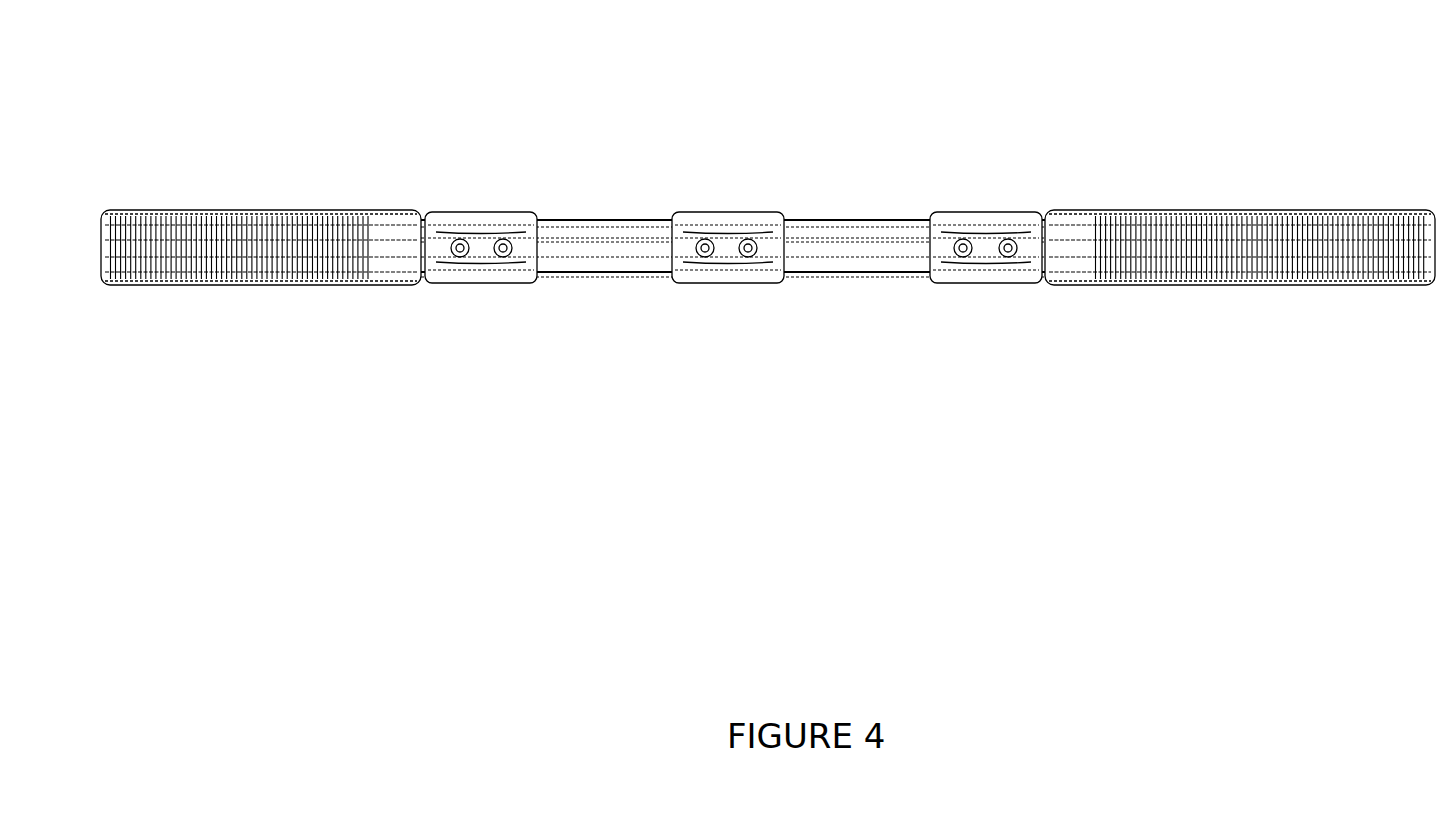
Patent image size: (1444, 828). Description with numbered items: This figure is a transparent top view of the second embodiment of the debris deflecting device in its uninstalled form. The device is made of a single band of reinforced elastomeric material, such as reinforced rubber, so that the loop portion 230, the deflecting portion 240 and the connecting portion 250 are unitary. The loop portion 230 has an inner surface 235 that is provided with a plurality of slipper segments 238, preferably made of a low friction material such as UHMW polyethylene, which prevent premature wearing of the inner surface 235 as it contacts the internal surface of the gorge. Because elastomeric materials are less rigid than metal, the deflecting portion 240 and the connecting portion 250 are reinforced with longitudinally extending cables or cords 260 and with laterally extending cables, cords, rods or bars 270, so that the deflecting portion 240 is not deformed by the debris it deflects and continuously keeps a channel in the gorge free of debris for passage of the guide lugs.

The loop portion 230 is at (733, 222).
The inner surface 235 is at (860, 247).
The slipper segments 238 is at (733, 303).
The deflecting portion 240 is at (425, 208).
The connecting portion 250 is at (226, 208).
The longitudinally extending cables or cords 260 is at (400, 256).
The laterally extending cables, cords, rods or bars 270 is at (315, 277).